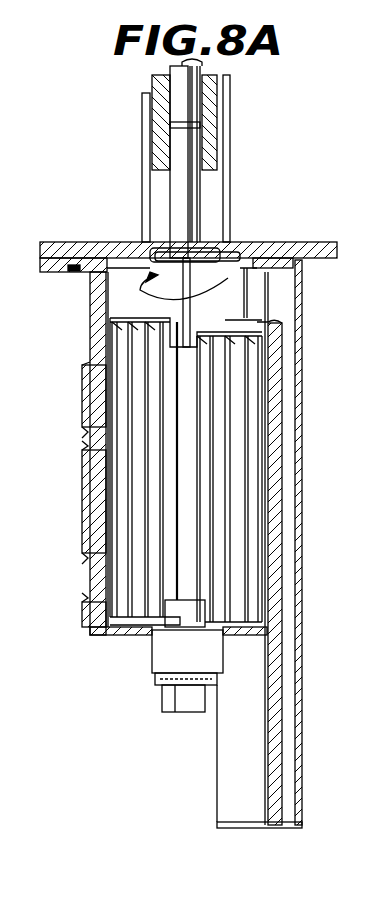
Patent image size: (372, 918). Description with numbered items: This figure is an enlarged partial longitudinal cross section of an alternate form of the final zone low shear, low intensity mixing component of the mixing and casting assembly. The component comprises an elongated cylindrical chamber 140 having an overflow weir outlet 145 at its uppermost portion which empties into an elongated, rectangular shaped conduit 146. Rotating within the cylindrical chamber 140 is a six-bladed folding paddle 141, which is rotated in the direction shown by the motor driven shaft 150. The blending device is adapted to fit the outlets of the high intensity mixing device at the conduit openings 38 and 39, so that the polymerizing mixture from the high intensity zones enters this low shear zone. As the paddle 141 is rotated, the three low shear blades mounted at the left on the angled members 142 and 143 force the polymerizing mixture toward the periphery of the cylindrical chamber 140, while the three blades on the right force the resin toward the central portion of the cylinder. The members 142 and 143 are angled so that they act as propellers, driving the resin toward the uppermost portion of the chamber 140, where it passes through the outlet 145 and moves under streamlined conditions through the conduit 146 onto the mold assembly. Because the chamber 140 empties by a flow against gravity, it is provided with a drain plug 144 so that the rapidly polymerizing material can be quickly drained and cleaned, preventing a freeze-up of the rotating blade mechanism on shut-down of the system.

The motor driven shaft 150 is at (193, 148).
The overflow weir outlet 145 is at (262, 292).
The angled member 142 is at (257, 322).
The elongated rectangular shaped conduit 146 is at (287, 385).
The cylindrical chamber 140 is at (280, 405).
The six-bladed folding paddle 141 is at (227, 458).
The conduit opening 39 is at (103, 450).
The conduit opening 38 is at (103, 591).
The angled member 143 is at (255, 637).
The drain plug 144 is at (187, 712).